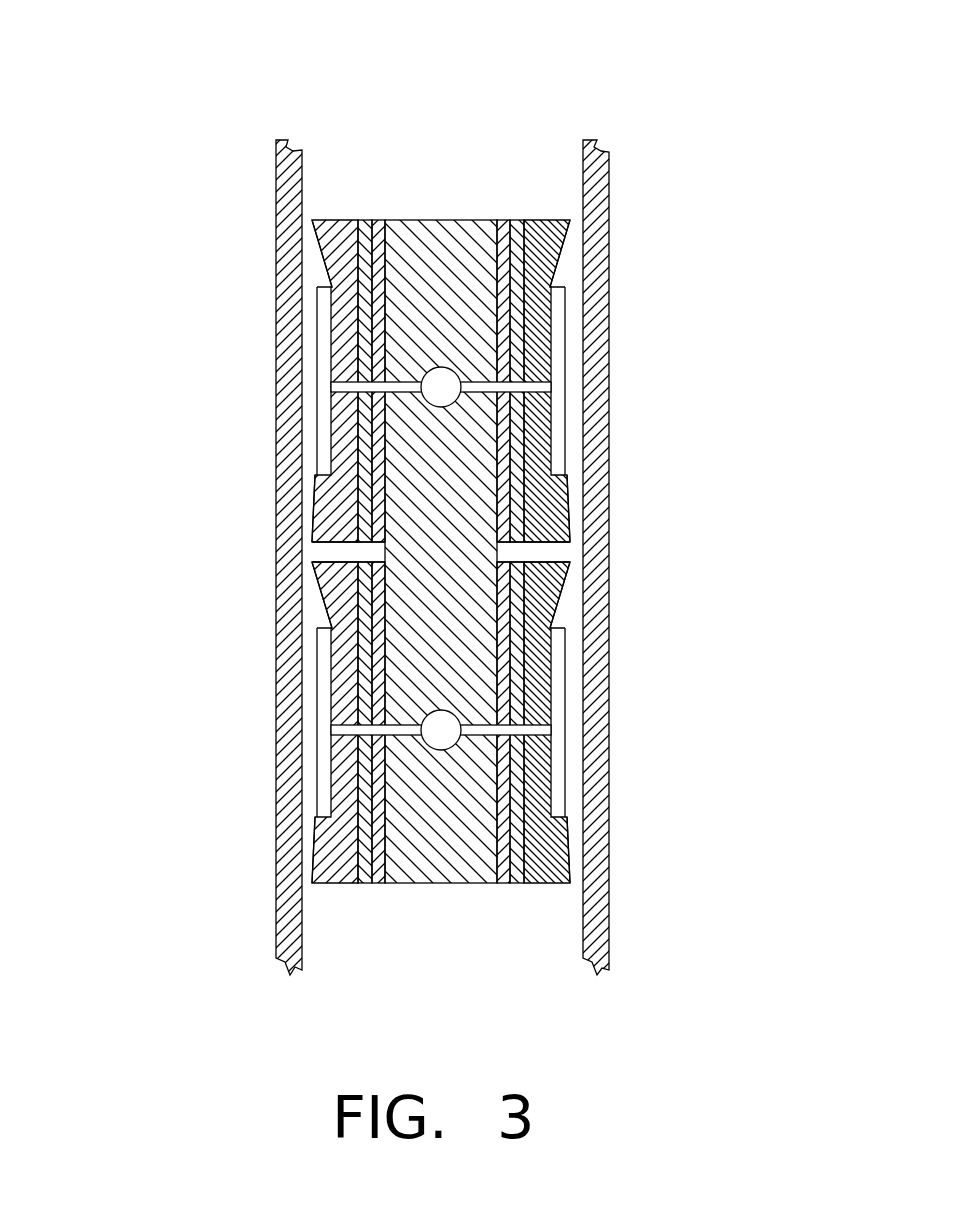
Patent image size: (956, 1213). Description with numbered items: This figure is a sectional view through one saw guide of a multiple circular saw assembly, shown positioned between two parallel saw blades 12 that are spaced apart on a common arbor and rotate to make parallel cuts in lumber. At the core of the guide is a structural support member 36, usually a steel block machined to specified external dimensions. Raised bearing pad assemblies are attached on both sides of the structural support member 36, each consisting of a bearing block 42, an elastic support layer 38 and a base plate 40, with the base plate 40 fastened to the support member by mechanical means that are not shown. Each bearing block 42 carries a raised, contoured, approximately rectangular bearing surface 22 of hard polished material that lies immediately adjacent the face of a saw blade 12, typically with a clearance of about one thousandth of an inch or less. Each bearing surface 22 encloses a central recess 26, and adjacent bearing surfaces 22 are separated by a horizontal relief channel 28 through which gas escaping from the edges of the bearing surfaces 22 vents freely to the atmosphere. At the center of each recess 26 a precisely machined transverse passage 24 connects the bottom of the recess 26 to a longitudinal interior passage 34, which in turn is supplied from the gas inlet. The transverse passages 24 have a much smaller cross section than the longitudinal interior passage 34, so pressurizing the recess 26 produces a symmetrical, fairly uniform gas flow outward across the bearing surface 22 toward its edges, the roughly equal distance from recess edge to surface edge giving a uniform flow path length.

The saw blade 12 is at (280, 628).
The bearing surface 22 is at (316, 258).
The transverse passage 24 is at (333, 388).
The central recess 26 is at (322, 437).
The horizontal relief channel 28 is at (315, 550).
The longitudinal interior passage 34 is at (438, 383).
The structural support member 36 is at (440, 220).
The elastic support layer 38 is at (365, 220).
The base plate 40 is at (377, 220).
The bearing block 42 is at (337, 505).